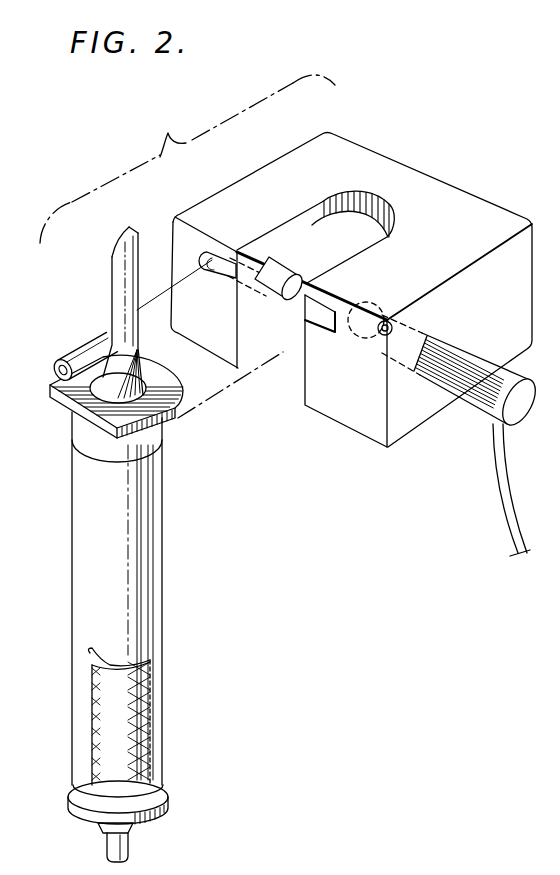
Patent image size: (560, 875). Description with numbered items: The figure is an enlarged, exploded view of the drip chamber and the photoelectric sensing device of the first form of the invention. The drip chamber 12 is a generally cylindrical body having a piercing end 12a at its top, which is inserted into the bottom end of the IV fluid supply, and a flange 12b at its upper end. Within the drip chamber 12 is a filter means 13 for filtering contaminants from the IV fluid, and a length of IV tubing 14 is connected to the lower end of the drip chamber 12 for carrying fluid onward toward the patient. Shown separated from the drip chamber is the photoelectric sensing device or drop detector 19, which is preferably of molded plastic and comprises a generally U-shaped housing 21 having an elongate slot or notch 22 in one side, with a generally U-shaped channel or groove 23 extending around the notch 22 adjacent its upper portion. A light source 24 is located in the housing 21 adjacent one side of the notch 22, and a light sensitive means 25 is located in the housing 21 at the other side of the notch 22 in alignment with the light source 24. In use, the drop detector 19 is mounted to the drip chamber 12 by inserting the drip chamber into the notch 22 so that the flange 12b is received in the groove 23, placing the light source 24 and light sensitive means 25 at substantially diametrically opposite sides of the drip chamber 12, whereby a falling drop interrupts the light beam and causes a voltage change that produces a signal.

The drip chamber 12 is at (116, 551).
The piercing end 12a is at (118, 290).
The flange 12b is at (62, 402).
The filter means 13 is at (140, 707).
The IV tubing 14 is at (125, 848).
The photoelectric sensing device 19 is at (356, 318).
The housing 21 is at (442, 190).
The notch 22 is at (220, 310).
The channel 23 is at (209, 247).
The light source 24 is at (300, 262).
The light sensitive means 25 is at (390, 300).